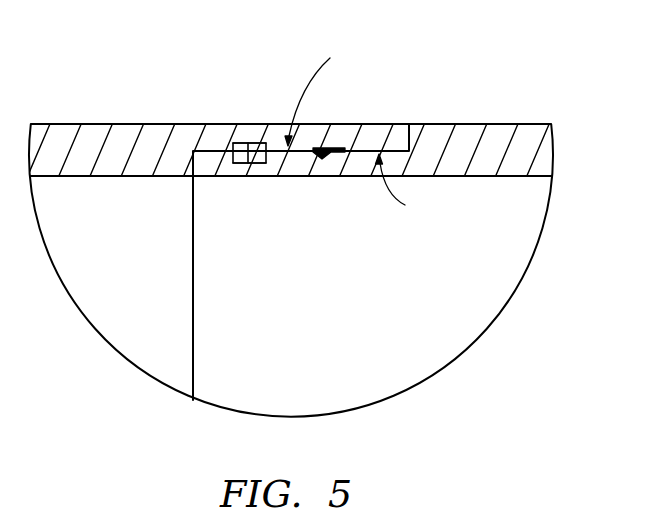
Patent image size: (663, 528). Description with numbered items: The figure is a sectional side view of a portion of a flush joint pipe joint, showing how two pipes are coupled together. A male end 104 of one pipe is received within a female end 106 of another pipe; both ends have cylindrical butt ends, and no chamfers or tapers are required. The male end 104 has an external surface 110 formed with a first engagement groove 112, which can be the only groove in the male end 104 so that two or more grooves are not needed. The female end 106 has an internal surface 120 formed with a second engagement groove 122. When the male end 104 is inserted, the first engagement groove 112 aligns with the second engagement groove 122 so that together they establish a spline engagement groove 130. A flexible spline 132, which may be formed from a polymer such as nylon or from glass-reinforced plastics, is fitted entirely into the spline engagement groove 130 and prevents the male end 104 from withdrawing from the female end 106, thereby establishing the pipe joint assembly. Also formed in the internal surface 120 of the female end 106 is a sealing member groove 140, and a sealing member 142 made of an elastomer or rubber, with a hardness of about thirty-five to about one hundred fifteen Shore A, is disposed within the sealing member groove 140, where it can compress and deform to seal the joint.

The male end 104 is at (283, 168).
The female end 106 is at (383, 128).
The external surface 110 is at (317, 87).
The first engagement groove 112 is at (249, 143).
The internal surface 120 is at (401, 195).
The second engagement groove 122 is at (263, 163).
The spline engagement groove 130 is at (266, 142).
The spline 132 is at (236, 143).
The sealing member groove 140 is at (324, 162).
The sealing member 142 is at (323, 147).